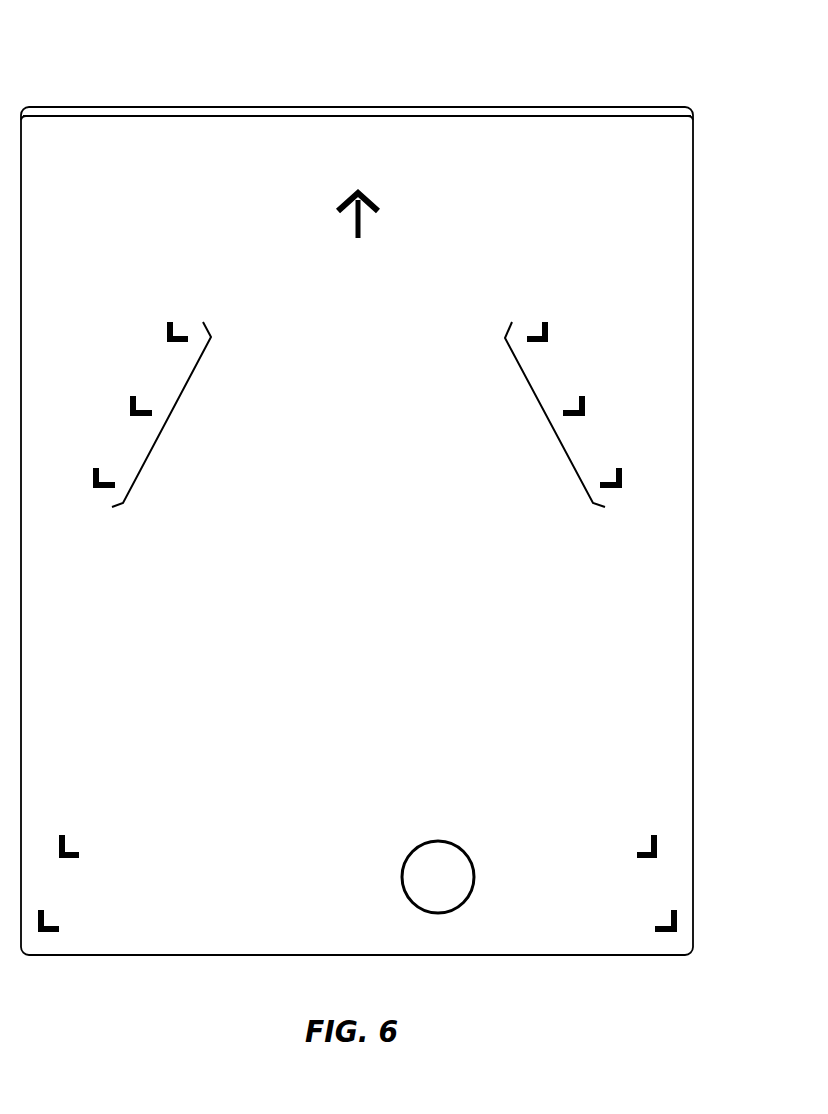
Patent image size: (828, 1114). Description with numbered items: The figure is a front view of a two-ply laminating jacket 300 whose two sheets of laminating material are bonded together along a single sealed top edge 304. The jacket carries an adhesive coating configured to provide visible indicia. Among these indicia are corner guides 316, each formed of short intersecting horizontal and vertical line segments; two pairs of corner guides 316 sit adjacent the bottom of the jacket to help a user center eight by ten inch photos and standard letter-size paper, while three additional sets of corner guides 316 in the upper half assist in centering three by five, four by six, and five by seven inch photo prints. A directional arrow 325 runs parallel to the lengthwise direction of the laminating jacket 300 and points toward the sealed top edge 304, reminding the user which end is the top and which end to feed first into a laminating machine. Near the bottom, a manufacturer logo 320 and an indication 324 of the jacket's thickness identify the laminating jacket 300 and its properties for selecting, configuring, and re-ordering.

The laminating jacket 300 is at (665, 55).
The sealed top edge 304 is at (67, 113).
The corner guides 316 is at (177, 407).
The manufacturer logo 320 is at (423, 833).
The indication of thickness 324 is at (528, 842).
The directional arrow 325 is at (357, 223).